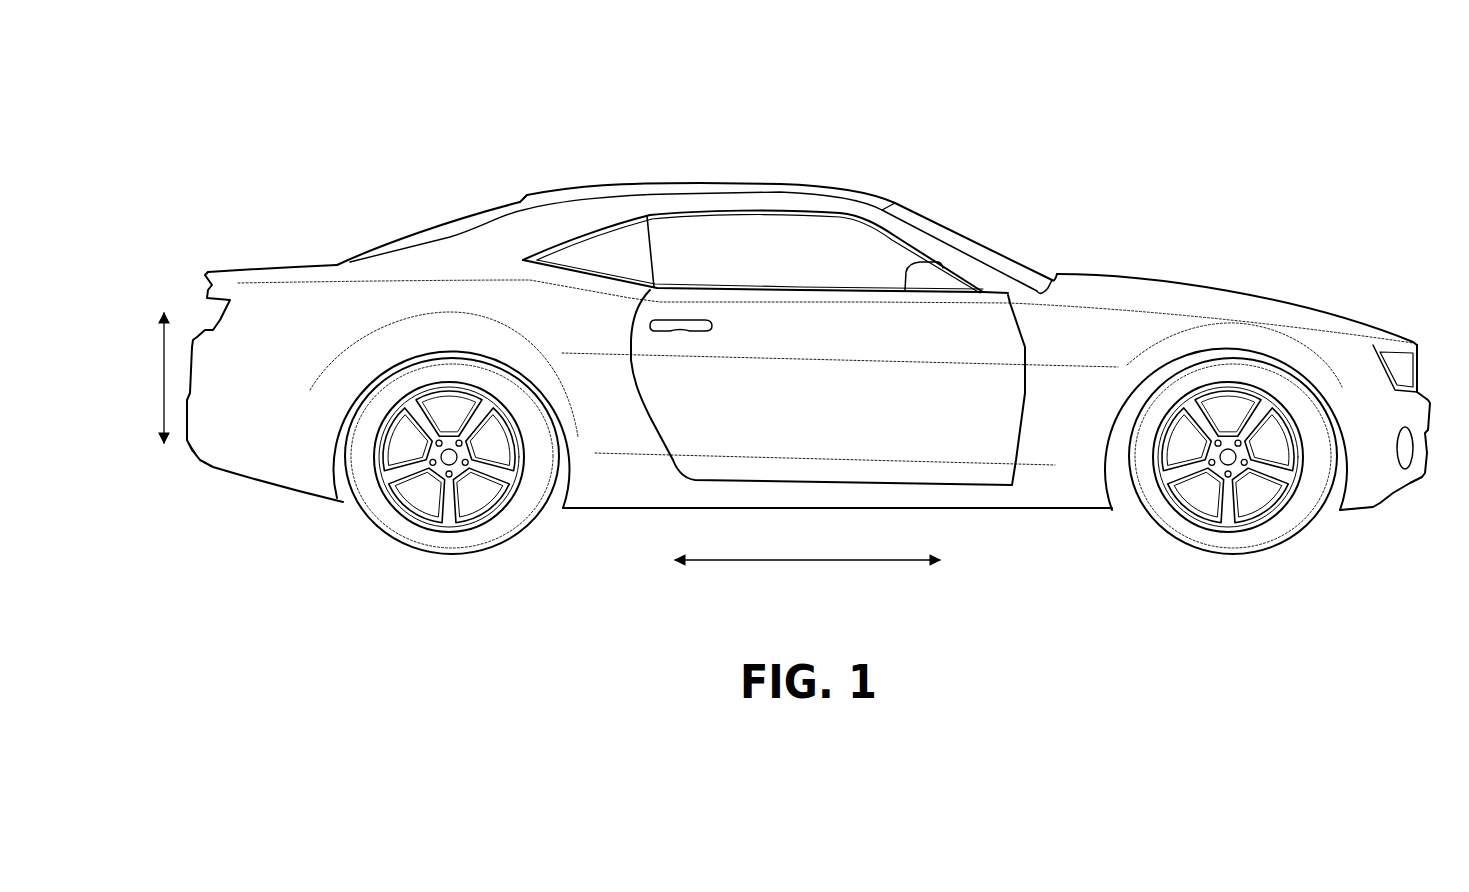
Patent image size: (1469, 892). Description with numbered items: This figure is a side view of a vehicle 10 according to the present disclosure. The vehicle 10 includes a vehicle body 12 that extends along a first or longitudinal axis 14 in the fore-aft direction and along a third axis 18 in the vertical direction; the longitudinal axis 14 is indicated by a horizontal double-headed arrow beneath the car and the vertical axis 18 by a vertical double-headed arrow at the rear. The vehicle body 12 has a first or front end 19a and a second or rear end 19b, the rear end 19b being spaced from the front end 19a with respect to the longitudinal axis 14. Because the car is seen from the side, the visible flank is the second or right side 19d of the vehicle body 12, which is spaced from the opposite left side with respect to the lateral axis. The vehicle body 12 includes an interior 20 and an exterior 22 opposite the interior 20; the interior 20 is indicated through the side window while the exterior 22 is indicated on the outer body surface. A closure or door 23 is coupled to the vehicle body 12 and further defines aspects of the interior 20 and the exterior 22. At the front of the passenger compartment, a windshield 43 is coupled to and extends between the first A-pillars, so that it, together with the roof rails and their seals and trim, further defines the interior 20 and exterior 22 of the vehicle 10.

The vehicle 10 is at (420, 115).
The vehicle body 12 is at (337, 267).
The longitudinal axis 14 is at (810, 565).
The third axis 18 is at (162, 382).
The front end 19a is at (1430, 266).
The rear end 19b is at (155, 268).
The right side 19d is at (950, 402).
The interior 20 is at (768, 230).
The exterior 22 is at (1147, 286).
The door 23 is at (692, 393).
The windshield 43 is at (976, 248).